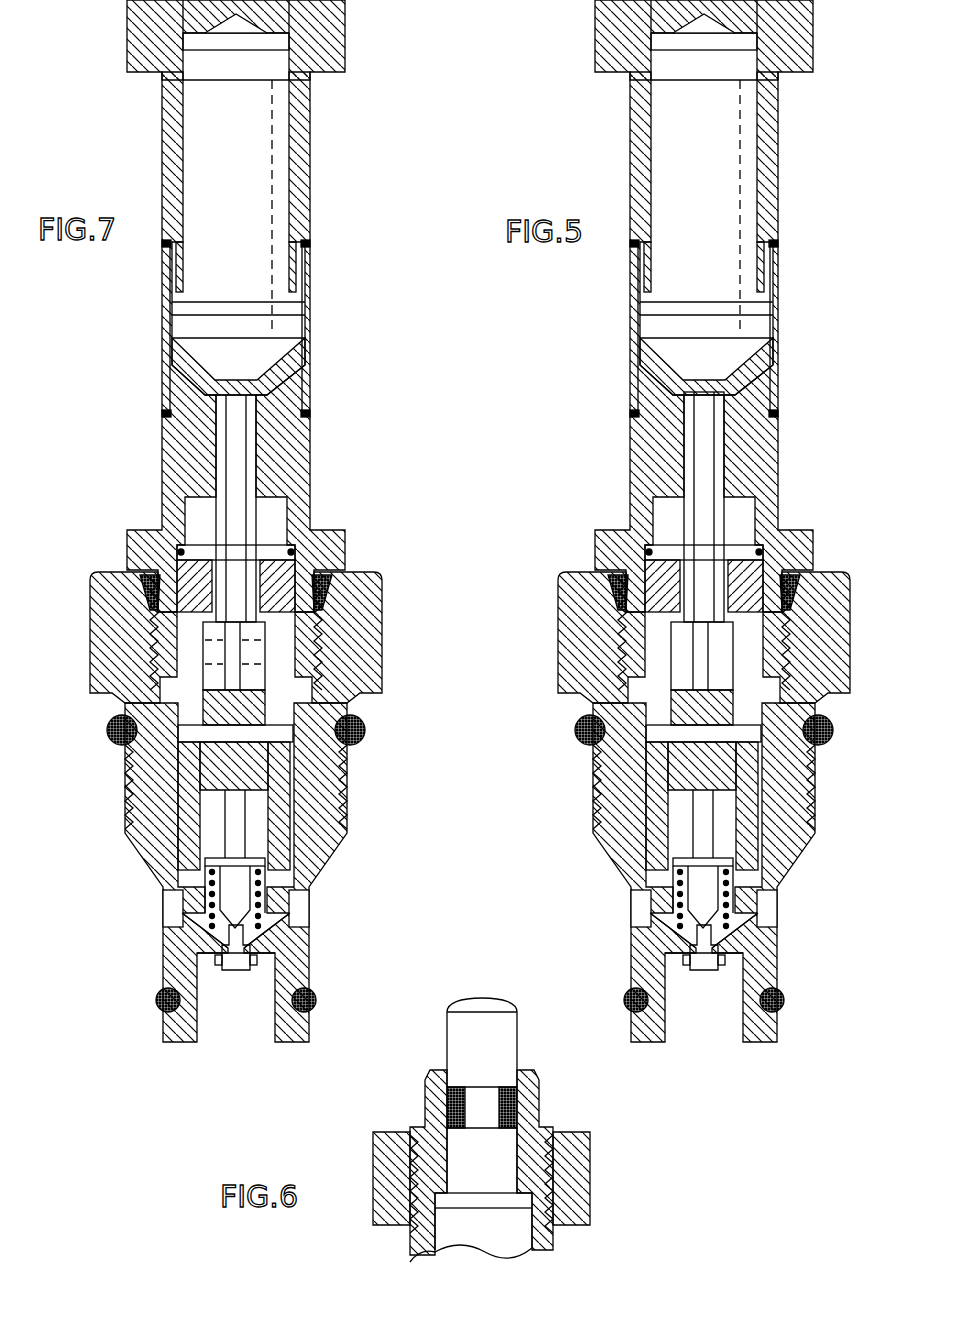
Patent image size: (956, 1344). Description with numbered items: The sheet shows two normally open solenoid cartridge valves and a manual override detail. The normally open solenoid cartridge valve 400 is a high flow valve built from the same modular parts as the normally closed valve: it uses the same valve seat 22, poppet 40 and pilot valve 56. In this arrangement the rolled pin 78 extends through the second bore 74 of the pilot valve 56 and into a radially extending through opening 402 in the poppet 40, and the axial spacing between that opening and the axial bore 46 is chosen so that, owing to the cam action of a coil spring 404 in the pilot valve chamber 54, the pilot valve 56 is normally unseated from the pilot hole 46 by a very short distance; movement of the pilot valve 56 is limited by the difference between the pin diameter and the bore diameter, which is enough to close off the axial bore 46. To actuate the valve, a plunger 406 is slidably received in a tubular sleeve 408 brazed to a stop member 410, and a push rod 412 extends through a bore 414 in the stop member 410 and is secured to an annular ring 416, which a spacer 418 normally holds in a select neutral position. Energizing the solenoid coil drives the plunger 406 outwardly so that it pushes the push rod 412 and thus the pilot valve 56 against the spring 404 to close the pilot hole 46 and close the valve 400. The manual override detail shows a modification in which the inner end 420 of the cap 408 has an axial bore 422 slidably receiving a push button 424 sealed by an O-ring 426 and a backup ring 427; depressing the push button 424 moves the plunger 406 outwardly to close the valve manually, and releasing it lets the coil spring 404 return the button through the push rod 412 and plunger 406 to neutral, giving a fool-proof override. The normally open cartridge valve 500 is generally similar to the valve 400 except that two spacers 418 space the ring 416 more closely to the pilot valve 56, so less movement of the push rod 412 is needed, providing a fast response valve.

In FIG. 7, the valve seat 22 is at (345, 672).
In FIG. 5, the valve seat 22 is at (721, 637).
In FIG. 7, the poppet 40 is at (265, 935).
In FIG. 5, the poppet 40 is at (764, 859).
In FIG. 5, the axial bore 46 is at (711, 997).
In FIG. 5, the pilot valve chamber 54 is at (668, 950).
In FIG. 7, the pilot valve 56 is at (237, 885).
In FIG. 5, the pilot valve 56 is at (764, 910).
In FIG. 7, the second bore 74 is at (290, 740).
In FIG. 5, the second bore 74 is at (730, 735).
In FIG. 7, the rolled pin 78 is at (287, 757).
In FIG. 5, the rolled pin 78 is at (763, 806).
In FIG. 5, the normally open solenoid cartridge valve 400 is at (568, 318).
In FIG. 5, the radially extending through opening 402 is at (660, 872).
In FIG. 5, the coil spring 404 is at (669, 908).
In FIG. 7, the plunger 406 is at (272, 236).
In FIG. 5, the plunger 406 is at (722, 197).
In FIG. 6, the plunger 406 is at (517, 1228).
In FIG. 5, the tubular sleeve 408 is at (740, 305).
In FIG. 6, the tubular sleeve 408 is at (530, 1080).
In FIG. 7, the stop member 410 is at (236, 342).
In FIG. 5, the stop member 410 is at (724, 342).
In FIG. 7, the push rod 412 is at (236, 528).
In FIG. 5, the push rod 412 is at (761, 507).
In FIG. 5, the bore 414 is at (627, 456).
In FIG. 7, the annular ring 416 is at (285, 580).
In FIG. 5, the annular ring 416 is at (755, 557).
In FIG. 7, the spacer 418 is at (291, 548).
In FIG. 5, the spacer 418 is at (626, 561).
In FIG. 6, the inner end 420 is at (535, 1112).
In FIG. 6, the axial bore 422 is at (457, 1065).
In FIG. 6, the push button 424 is at (490, 1025).
In FIG. 6, the O-ring 426 is at (520, 1105).
In FIG. 6, the backup ring 427 is at (455, 1100).
In FIG. 7, the normally open cartridge valve 500 is at (324, 386).